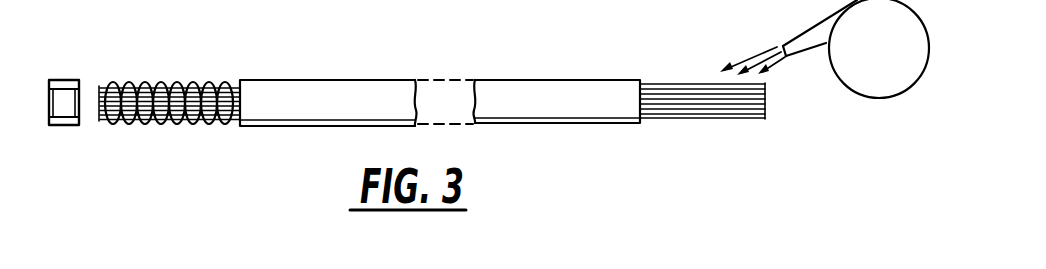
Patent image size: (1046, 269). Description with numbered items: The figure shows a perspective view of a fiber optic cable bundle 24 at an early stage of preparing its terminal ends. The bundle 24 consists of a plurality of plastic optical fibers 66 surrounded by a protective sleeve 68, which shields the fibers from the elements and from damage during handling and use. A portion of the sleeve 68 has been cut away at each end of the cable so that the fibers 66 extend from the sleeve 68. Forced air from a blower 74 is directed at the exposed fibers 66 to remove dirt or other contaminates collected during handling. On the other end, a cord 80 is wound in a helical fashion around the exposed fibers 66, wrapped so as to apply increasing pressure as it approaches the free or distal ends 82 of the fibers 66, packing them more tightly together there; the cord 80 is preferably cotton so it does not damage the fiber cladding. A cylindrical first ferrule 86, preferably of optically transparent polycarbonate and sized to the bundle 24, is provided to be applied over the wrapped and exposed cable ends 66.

The fiber optic cable bundle 24 is at (586, 20).
The plastic optical fibers 66 is at (184, 99).
The protective sleeve 68 is at (379, 36).
The blower 74 is at (901, 62).
The cord 80 is at (108, 84).
The distal ends 82 is at (100, 114).
The first ferrule 86 is at (62, 79).